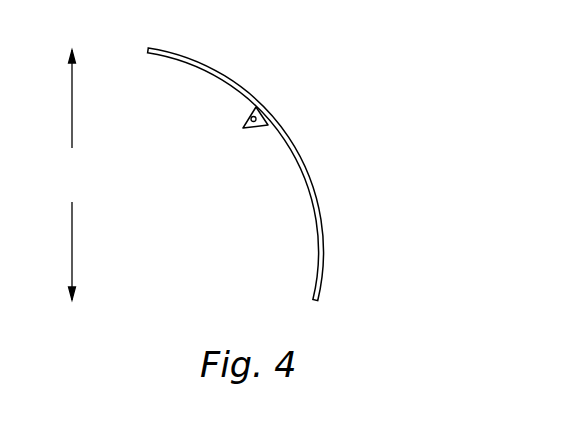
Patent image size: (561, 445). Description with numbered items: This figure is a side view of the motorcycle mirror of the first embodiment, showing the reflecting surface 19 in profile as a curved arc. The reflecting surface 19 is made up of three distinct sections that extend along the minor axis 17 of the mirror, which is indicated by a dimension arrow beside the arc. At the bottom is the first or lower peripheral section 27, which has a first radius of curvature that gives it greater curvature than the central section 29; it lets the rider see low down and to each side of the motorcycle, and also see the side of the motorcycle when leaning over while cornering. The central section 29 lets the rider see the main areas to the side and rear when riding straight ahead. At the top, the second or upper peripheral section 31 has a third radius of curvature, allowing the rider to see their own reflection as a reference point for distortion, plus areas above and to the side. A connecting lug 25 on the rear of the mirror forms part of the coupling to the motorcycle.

The minor axis 17 is at (73, 175).
The reflecting surface 19 is at (356, 154).
The connecting lug 25 is at (243, 123).
The first or lower peripheral section 27 is at (324, 247).
The central section 29 is at (285, 130).
The second or upper peripheral section 31 is at (203, 63).